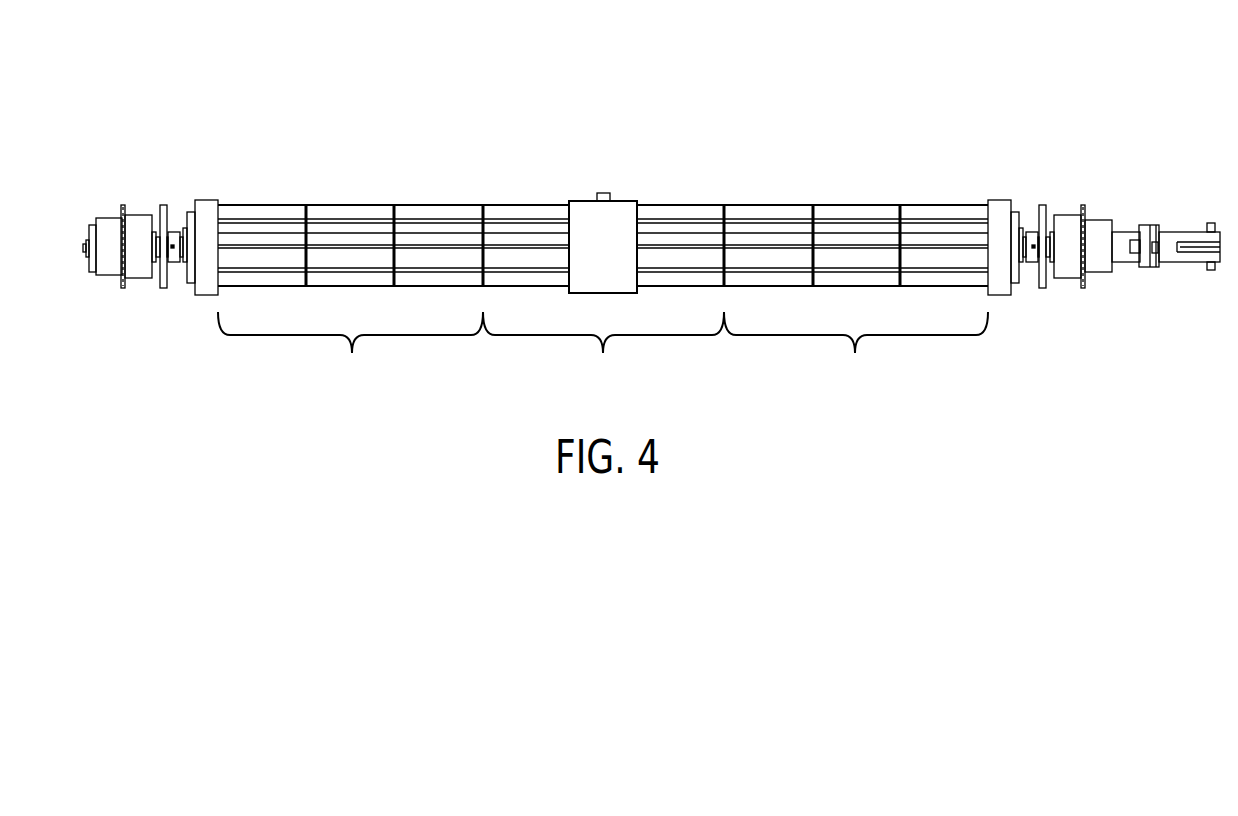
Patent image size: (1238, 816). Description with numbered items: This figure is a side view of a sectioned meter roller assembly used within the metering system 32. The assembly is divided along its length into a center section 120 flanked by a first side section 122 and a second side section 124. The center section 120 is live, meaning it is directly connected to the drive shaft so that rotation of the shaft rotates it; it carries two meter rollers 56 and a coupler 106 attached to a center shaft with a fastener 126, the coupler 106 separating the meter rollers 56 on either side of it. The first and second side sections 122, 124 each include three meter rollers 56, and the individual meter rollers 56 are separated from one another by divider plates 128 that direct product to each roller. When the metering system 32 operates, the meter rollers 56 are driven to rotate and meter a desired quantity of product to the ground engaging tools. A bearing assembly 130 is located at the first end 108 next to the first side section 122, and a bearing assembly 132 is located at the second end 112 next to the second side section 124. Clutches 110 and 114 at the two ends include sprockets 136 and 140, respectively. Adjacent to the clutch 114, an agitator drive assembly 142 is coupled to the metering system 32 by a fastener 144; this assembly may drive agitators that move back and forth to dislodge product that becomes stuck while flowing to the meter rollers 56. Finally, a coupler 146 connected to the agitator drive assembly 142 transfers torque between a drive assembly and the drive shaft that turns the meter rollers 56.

The metering system 32 is at (1066, 95).
The meter rollers 56 is at (264, 205).
The coupler 106 is at (585, 208).
The first end 108 is at (187, 200).
The clutch 110 is at (120, 200).
The second end 112 is at (1030, 198).
The clutch 114 is at (1090, 198).
The center section 120 is at (603, 349).
The first side section 122 is at (350, 349).
The second side section 124 is at (856, 349).
The fastener 126 is at (607, 193).
The divider plates 128 is at (306, 205).
The bearing assembly 130 is at (207, 200).
The bearing assembly 132 is at (1003, 200).
The sprocket 136 is at (123, 268).
The sprocket 140 is at (1085, 268).
The agitator drive assembly 142 is at (1143, 267).
The fastener 144 is at (1155, 240).
The coupler 146 is at (1185, 262).